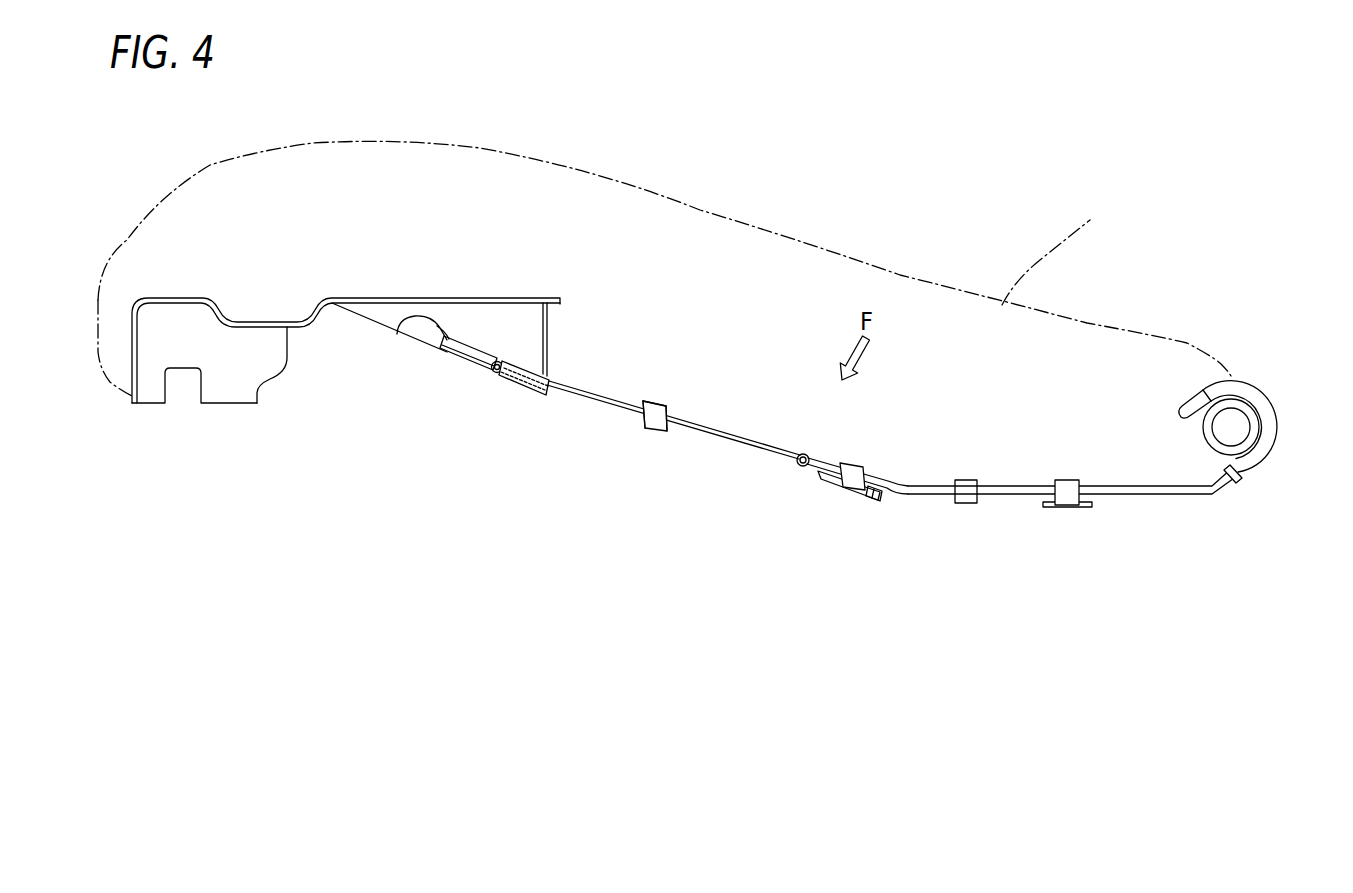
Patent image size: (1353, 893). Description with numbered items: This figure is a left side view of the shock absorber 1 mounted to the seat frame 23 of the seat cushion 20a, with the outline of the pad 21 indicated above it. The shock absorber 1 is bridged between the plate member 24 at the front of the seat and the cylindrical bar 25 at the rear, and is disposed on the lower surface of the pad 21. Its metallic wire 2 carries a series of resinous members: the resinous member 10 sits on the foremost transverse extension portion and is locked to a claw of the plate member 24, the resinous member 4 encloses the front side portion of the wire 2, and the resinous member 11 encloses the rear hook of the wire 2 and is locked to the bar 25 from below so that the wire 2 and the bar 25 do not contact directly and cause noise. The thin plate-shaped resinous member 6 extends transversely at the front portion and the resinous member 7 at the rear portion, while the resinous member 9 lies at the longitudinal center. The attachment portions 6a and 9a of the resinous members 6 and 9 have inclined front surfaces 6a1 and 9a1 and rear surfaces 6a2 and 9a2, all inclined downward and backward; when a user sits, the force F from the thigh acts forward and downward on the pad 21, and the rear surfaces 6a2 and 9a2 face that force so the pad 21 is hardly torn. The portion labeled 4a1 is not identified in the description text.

The shock absorber 1 is at (716, 527).
The wire 2 is at (707, 432).
The resinous member 4 is at (491, 394).
The tube portion of clamp 4a1 is at (552, 382).
The resinous member 6 is at (652, 434).
The attachment portion 6a is at (657, 401).
The front surface 6a1 is at (637, 414).
The rear surface 6a2 is at (668, 428).
The resinous member 7 is at (1068, 514).
The resinous member 9 is at (852, 503).
The attachment portion 9a is at (857, 466).
The front surface 9a1 is at (827, 483).
The rear surface 9a2 is at (883, 495).
The resinous member 10 is at (411, 353).
The resinous member 11 is at (1255, 397).
The seat cushion 20a is at (801, 232).
The pad 21 is at (1060, 244).
The seat frame 23 is at (131, 276).
The plate member 24 is at (150, 345).
The bar 25 is at (1251, 432).